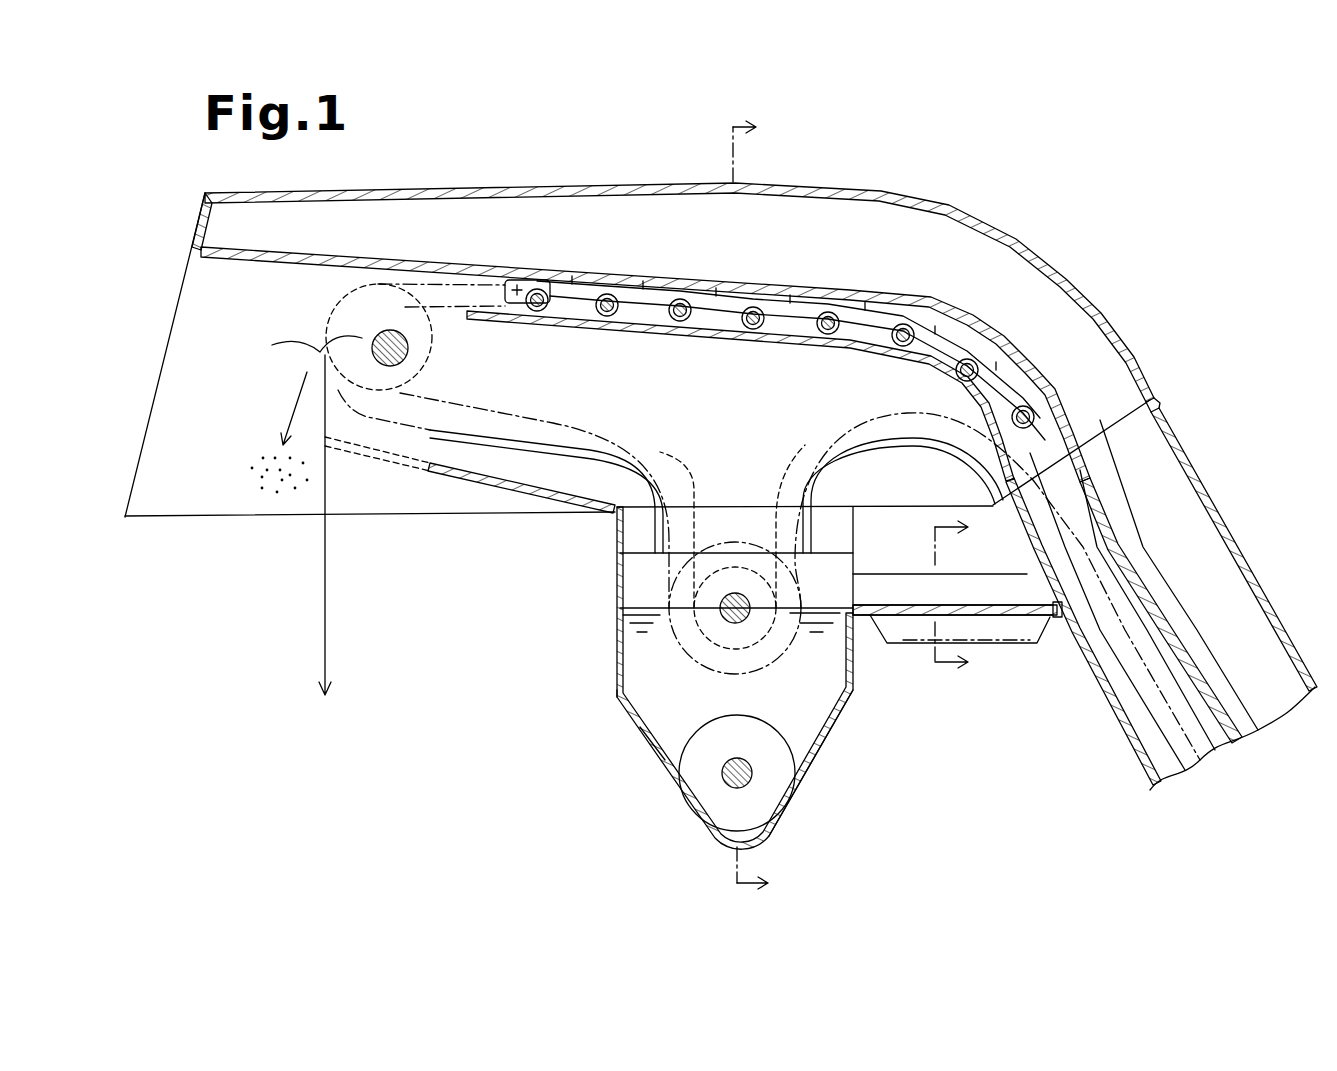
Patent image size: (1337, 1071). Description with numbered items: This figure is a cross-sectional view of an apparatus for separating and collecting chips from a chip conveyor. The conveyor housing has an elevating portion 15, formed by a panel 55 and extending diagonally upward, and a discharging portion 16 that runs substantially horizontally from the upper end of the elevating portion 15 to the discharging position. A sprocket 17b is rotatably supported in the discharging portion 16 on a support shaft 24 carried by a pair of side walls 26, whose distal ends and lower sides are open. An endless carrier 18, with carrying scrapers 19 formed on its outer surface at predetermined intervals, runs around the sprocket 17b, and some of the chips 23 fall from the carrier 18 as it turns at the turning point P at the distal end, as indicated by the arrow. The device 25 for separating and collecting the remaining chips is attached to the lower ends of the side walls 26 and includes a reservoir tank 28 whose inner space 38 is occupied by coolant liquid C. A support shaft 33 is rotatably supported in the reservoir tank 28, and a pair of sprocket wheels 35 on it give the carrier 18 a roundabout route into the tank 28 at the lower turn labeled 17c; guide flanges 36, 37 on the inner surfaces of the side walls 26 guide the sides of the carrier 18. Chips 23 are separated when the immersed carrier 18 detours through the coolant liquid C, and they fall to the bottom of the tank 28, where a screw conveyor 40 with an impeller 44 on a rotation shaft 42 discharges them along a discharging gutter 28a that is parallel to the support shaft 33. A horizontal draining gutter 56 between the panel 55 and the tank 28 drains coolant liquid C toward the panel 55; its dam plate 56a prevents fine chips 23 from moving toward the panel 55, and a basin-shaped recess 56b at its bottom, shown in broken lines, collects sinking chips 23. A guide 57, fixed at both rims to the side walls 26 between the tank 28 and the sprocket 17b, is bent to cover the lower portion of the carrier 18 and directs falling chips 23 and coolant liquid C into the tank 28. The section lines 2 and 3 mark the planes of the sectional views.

The elevating portion 15 is at (1237, 533).
The discharging portion 16 is at (494, 175).
The sprocket 17b is at (360, 333).
The pulley 17c is at (735, 560).
The endless carrier 18 is at (724, 291).
The carrying scrapers 19 is at (636, 296).
The chips 23 is at (262, 481).
The support shaft 24 is at (323, 355).
The device for separating and collecting chips 25 is at (602, 652).
The side walls 26 is at (205, 292).
The reservoir tank 28 is at (617, 690).
The discharging gutter 28a is at (660, 758).
The support shaft 33 is at (730, 625).
The sprocket wheels 35 is at (760, 633).
The guide flange 36 is at (500, 443).
The guide flange 37 is at (845, 455).
The inner space 38 is at (673, 680).
The screw conveyor 40 is at (814, 803).
The rotation shaft 42 is at (726, 784).
The impeller 44 is at (690, 790).
The panel 55 is at (1115, 710).
The draining gutter 56 is at (907, 623).
The dam plate 56a is at (1040, 592).
The basin-shaped recess 56b is at (1011, 657).
The guide 57 is at (498, 486).
The turning point P is at (305, 334).
The coolant liquid C is at (640, 610).
The section line 2 is at (764, 507).
The section line 3 is at (965, 590).